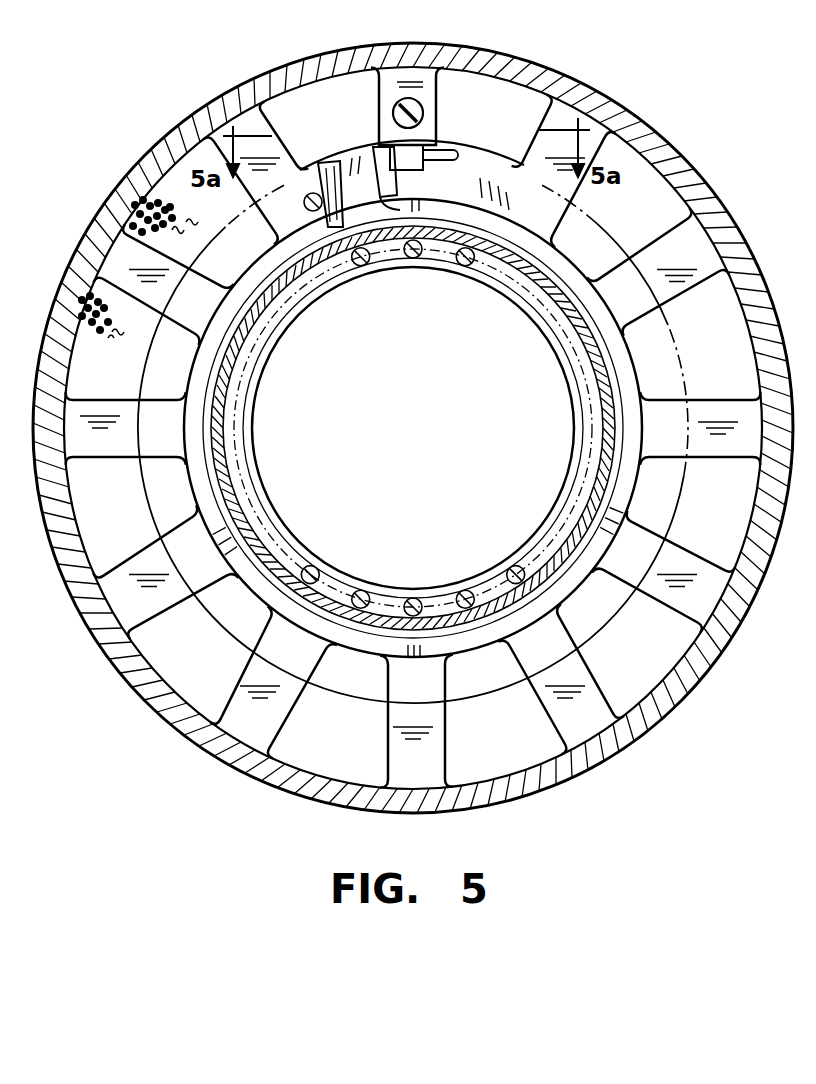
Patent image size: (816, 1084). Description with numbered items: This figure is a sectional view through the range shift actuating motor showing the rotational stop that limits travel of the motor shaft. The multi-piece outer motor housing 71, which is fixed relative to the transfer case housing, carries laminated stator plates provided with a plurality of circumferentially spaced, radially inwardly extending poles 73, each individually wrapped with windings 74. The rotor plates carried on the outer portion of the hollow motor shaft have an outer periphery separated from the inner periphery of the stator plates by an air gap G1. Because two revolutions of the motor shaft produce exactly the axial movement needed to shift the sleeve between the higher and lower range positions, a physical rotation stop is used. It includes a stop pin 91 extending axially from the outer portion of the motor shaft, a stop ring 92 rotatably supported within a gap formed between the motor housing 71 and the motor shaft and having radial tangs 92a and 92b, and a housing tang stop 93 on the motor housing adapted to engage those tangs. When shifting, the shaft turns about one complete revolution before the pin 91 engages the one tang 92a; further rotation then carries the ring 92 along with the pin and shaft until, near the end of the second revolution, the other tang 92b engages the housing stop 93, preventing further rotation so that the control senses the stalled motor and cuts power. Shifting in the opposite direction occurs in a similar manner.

The motor housing 71 is at (648, 135).
The poles 73 is at (130, 263).
The windings 74 is at (153, 197).
The stop pin 91 is at (307, 190).
The stop ring 92 is at (290, 310).
The radial tang 92a is at (349, 162).
The radial tang 92b is at (378, 160).
The housing tang stop 93 is at (458, 152).
The air gap G1 is at (142, 491).